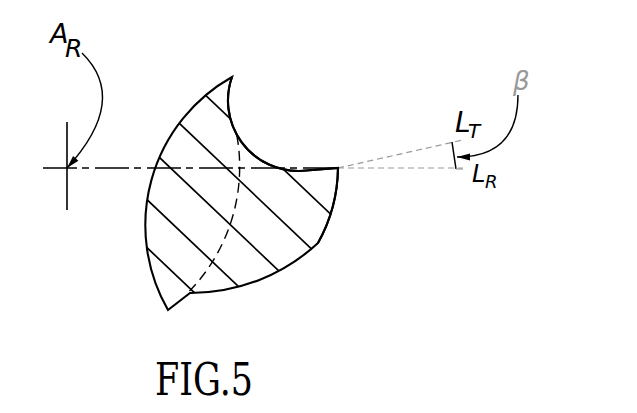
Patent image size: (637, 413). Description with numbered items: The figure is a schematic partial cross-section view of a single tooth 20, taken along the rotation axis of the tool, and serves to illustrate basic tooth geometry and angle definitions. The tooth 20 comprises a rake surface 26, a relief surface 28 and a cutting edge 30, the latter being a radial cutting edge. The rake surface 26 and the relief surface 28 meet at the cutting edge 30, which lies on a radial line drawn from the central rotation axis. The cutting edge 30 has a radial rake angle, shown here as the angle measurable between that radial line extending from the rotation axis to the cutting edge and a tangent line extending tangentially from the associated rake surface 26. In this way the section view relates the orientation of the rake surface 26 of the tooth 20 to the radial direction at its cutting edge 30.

The tooth 20 is at (350, 198).
The rake surface 26 is at (290, 167).
The relief surface 28 is at (331, 224).
The cutting edge 30 is at (338, 167).